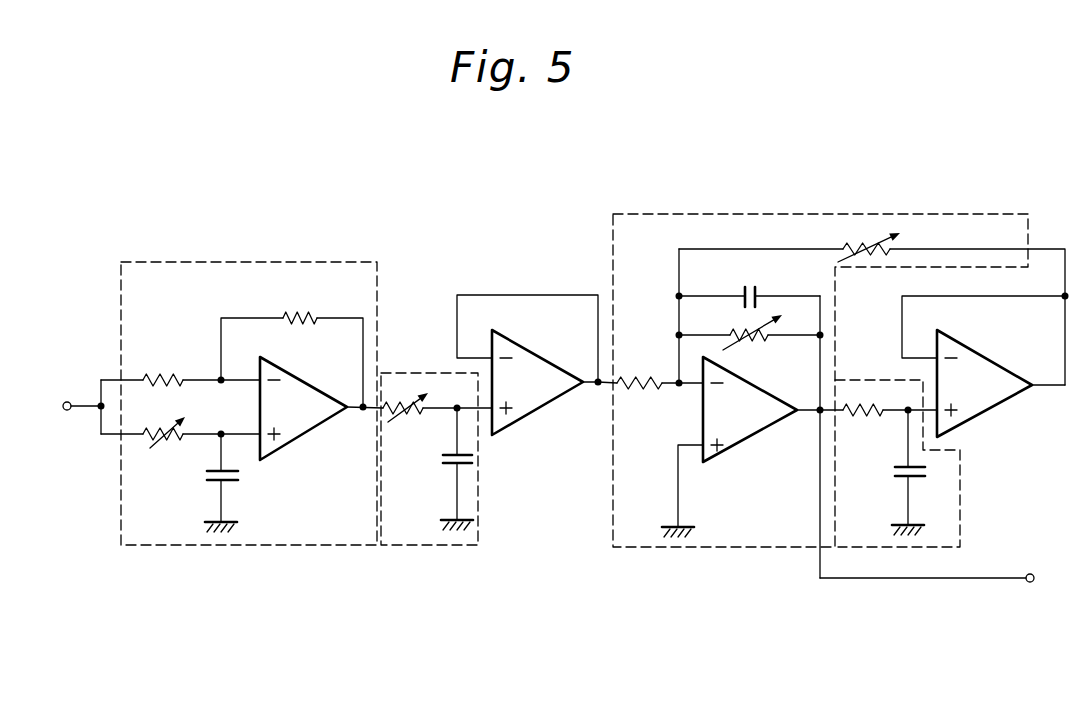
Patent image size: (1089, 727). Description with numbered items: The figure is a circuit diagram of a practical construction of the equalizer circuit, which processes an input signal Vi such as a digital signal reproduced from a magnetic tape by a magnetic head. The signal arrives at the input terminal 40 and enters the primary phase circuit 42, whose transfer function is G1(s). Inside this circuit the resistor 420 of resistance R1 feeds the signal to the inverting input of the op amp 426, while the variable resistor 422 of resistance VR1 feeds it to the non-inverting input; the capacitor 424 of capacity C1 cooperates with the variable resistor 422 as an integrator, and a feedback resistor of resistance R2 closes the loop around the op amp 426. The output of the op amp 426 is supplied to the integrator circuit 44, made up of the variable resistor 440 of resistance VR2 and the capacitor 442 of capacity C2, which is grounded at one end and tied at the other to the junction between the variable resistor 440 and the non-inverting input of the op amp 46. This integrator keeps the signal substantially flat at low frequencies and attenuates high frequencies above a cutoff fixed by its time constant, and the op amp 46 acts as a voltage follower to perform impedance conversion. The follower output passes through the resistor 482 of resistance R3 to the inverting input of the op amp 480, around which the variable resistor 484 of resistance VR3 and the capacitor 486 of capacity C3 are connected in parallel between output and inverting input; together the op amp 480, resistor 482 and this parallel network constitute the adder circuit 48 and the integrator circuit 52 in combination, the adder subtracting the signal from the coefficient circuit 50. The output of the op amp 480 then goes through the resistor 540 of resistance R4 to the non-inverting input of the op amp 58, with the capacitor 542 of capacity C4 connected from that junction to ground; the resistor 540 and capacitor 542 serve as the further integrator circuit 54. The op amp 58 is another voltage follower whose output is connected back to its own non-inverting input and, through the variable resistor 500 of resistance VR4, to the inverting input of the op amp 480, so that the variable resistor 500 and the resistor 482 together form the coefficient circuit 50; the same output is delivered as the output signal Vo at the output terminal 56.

The input terminal 40 is at (67, 405).
The primary phase circuit 42 is at (236, 261).
The resistor 420 is at (162, 371).
The variable resistor 422 is at (158, 450).
The capacitor 424 is at (238, 477).
The op amp 426 is at (312, 425).
The resistor 482 is at (293, 315).
The integrator circuit 44 is at (402, 372).
The variable resistor 440 is at (410, 412).
The capacitor 442 is at (470, 465).
The op amp 46 is at (542, 358).
The adder circuit 48 is at (815, 214).
The integrator circuit 52 is at (750, 413).
The coefficient circuit 50 is at (874, 317).
The variable resistor 484 is at (735, 332).
The capacitor 486 is at (749, 287).
The variable resistor 500 is at (926, 242).
The op amp 480 is at (770, 425).
The integrator circuit 54 is at (868, 378).
The resistor 540 is at (853, 420).
The capacitor 542 is at (893, 473).
The op amp 58 is at (985, 403).
The output terminal 56 is at (1030, 573).